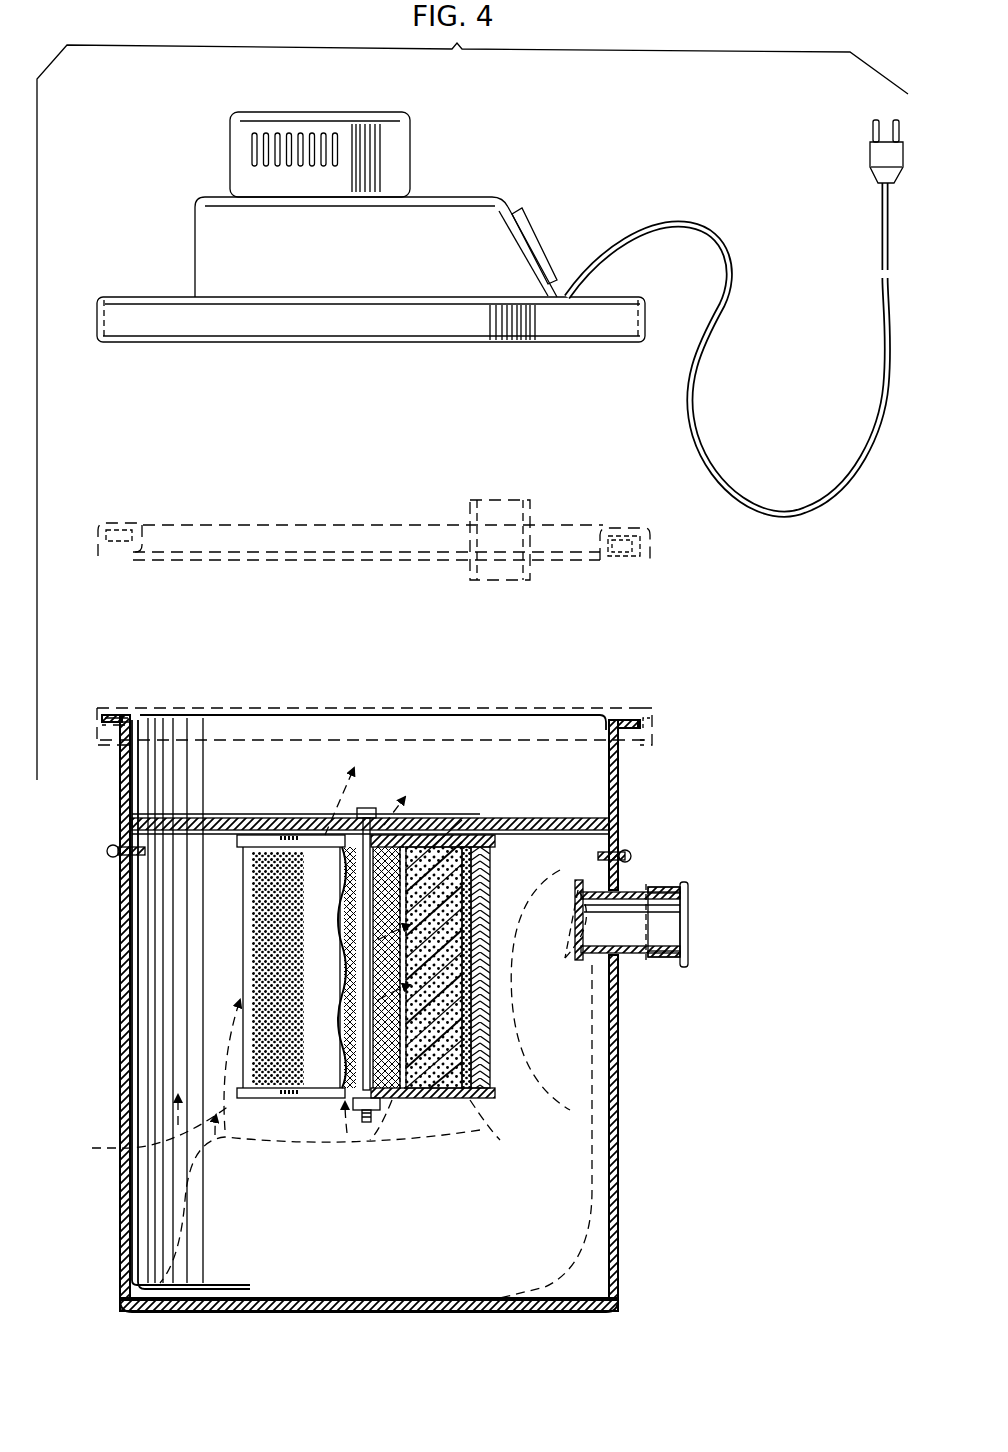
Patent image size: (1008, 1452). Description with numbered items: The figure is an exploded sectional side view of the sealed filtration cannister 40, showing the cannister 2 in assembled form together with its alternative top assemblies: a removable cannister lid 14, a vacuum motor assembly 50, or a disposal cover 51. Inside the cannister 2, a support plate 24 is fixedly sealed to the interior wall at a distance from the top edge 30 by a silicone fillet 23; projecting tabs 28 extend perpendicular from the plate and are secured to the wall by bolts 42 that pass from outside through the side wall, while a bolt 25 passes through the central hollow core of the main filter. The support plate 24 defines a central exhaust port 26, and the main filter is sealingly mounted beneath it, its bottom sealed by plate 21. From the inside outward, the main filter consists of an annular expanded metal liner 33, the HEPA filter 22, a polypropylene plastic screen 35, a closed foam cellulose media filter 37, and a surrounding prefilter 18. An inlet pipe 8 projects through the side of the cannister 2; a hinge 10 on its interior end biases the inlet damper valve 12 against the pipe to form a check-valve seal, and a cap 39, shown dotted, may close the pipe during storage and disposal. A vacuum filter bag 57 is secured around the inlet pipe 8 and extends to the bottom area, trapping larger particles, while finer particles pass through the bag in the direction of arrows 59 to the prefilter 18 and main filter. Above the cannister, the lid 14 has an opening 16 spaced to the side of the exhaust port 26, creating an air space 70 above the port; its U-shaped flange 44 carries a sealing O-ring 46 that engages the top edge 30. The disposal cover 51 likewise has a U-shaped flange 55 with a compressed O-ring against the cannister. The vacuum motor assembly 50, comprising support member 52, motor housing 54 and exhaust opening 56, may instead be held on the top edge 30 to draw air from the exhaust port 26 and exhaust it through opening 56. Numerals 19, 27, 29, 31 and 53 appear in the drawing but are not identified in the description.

The cannister 2 is at (120, 1050).
The inlet pipe 8 is at (633, 930).
The hinge 10 is at (605, 880).
The inlet damper valve 12 is at (580, 965).
The cannister lid 14 is at (215, 512).
The opening 16 is at (492, 500).
The prefilter 18 is at (482, 1005).
The filter cage 19 is at (482, 868).
The plate 21 is at (460, 1100).
The HEPA filter 22 is at (420, 852).
The silicone fillet 23 is at (615, 830).
The support plate 24 is at (545, 830).
The bolt 25 is at (342, 1090).
The exhaust port 26 is at (382, 832).
The shaft 27 is at (372, 820).
The projecting tabs 28 is at (613, 845).
The nut 29 is at (372, 1098).
The top edge 30 is at (108, 725).
The nut 31 is at (365, 1112).
The expanded metal liner 33 is at (340, 880).
The plastic screen 35 is at (468, 1070).
The closed foam cellulose media filter 37 is at (470, 1040).
The cap 39 is at (690, 945).
The sealed filtration cannister 40 is at (117, 962).
The bolts 42 is at (630, 855).
The U-shaped flange 44 is at (652, 558).
The sealing O-ring 46 is at (628, 560).
The vacuum motor assembly 50 is at (500, 511).
The disposal cover 51 is at (525, 705).
The support member 52 is at (598, 342).
The lid clip 53 is at (655, 718).
The motor housing 54 is at (398, 148).
The U-shaped flange 55 is at (648, 743).
The exhaust opening 56 is at (540, 245).
The vacuum filter bag 57 is at (605, 1210).
The arrows 59 is at (120, 1148).
The air space 70 is at (220, 765).